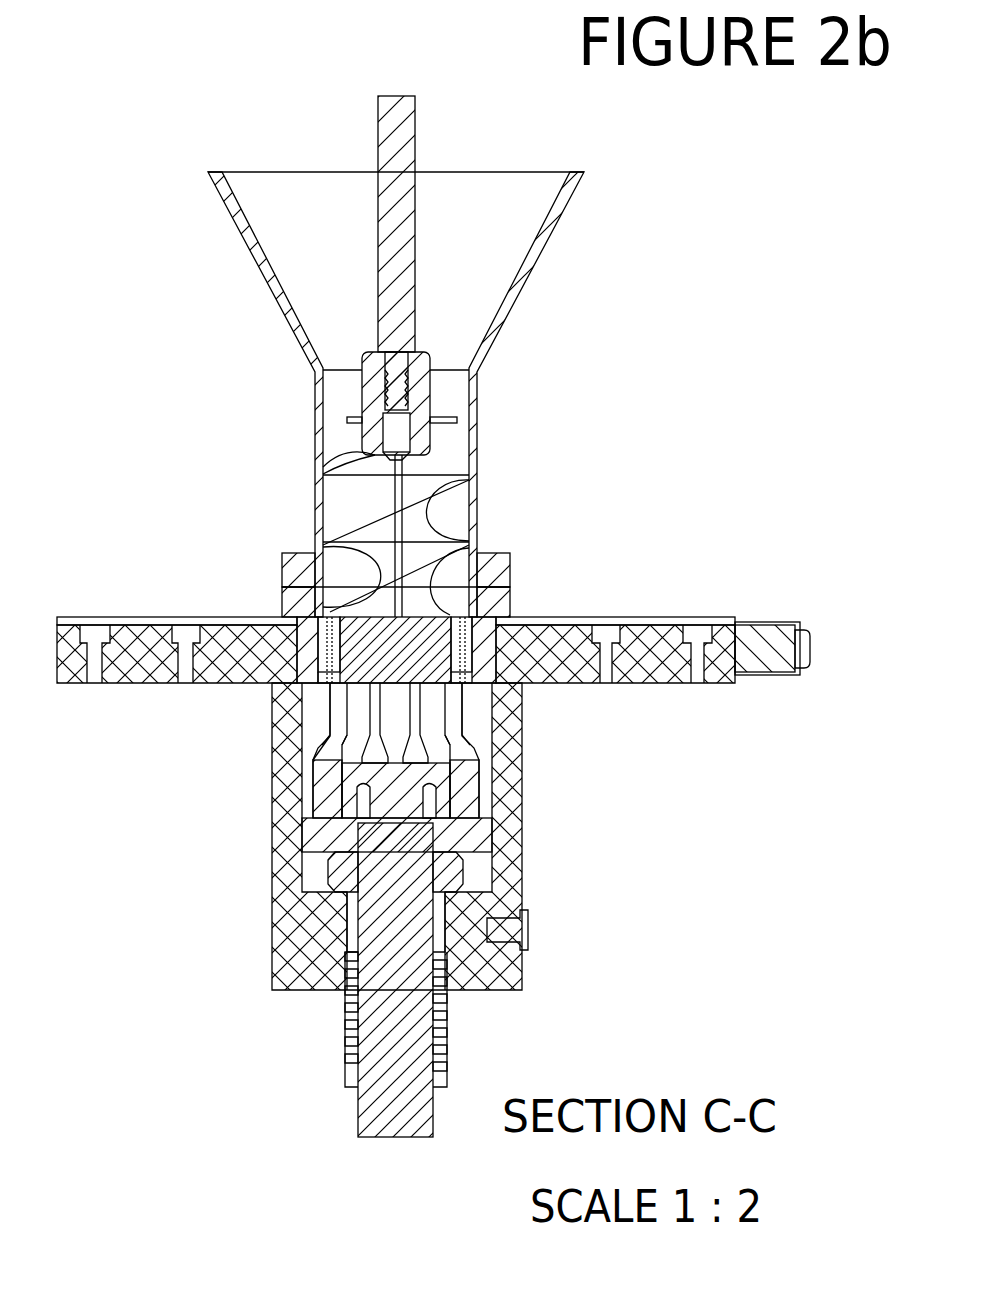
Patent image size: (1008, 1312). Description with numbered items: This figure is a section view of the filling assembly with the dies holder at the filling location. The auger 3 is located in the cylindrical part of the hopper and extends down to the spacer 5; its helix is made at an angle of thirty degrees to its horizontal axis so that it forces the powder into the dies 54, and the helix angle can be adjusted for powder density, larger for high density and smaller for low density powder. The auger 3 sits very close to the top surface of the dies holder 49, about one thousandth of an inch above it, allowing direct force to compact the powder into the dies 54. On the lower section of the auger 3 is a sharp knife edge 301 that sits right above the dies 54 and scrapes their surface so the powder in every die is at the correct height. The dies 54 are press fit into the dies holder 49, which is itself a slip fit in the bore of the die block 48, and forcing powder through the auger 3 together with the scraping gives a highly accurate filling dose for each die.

The auger 3 is at (420, 553).
The sharp knife edge 301 is at (487, 582).
The spacer 5 is at (503, 605).
The dies holder 49 is at (277, 617).
The dies 54 is at (507, 683).
The die block 48 is at (720, 668).